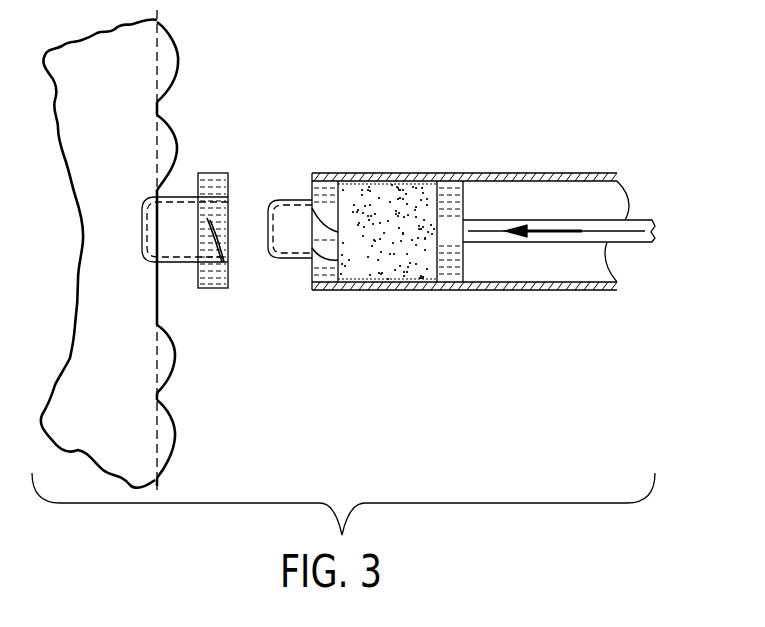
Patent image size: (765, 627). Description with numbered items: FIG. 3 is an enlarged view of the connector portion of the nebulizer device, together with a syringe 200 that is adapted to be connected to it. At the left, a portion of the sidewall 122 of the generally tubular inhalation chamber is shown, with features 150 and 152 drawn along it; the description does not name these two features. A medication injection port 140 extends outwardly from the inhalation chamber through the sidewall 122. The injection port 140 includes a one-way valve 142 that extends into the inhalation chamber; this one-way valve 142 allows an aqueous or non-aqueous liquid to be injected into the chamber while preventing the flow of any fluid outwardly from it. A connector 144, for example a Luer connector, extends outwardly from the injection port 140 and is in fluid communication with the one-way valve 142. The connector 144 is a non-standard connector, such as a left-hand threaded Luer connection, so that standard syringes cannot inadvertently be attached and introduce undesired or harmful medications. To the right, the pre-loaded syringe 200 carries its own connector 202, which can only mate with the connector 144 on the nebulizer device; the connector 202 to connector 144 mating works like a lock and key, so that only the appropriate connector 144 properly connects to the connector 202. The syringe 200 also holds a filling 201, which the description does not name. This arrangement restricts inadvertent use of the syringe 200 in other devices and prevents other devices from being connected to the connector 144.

The sidewall 122 is at (157, 146).
The upper tissue protrusion 150 is at (177, 62).
The lower tissue protrusion 152 is at (157, 393).
The medication injection port 140 is at (229, 185).
The one-way valve 142 is at (178, 197).
The connector 144 is at (229, 261).
The syringe 200 is at (498, 173).
The filler material 201 is at (385, 250).
The connector 202 is at (323, 173).